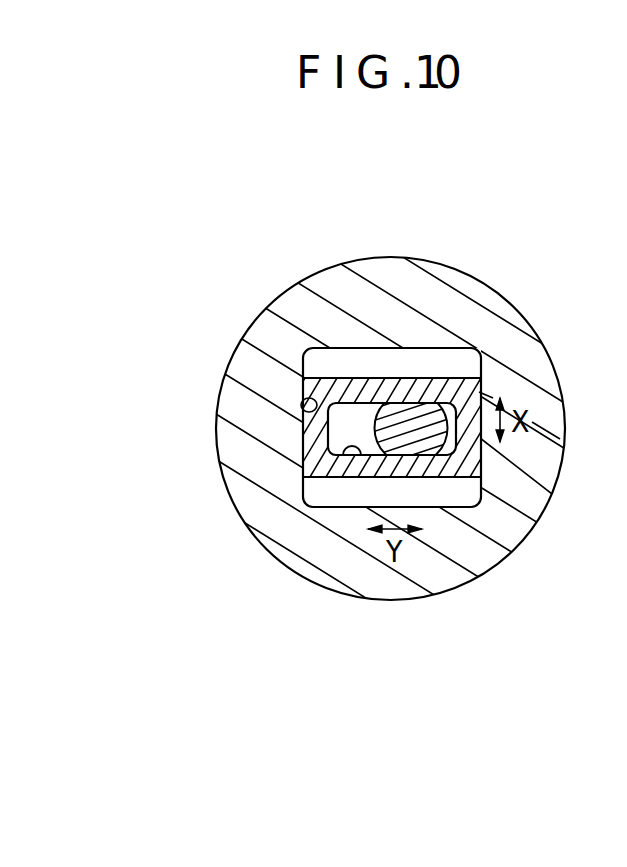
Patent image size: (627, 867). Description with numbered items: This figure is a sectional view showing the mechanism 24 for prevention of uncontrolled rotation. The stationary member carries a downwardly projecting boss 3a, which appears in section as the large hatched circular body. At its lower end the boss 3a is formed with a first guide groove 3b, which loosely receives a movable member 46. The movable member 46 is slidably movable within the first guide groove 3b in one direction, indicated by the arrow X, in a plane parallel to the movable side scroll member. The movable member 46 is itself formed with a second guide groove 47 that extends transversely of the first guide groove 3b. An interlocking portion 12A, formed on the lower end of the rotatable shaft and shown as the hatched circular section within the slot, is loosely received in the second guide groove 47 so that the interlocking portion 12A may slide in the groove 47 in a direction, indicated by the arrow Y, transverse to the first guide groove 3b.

The mechanism 24 is at (273, 302).
The boss 3a is at (488, 305).
The first guide groove 3b is at (302, 411).
The interlocking portion 12A is at (553, 496).
The movable member 46 is at (328, 453).
The second guide groove 47 is at (343, 455).